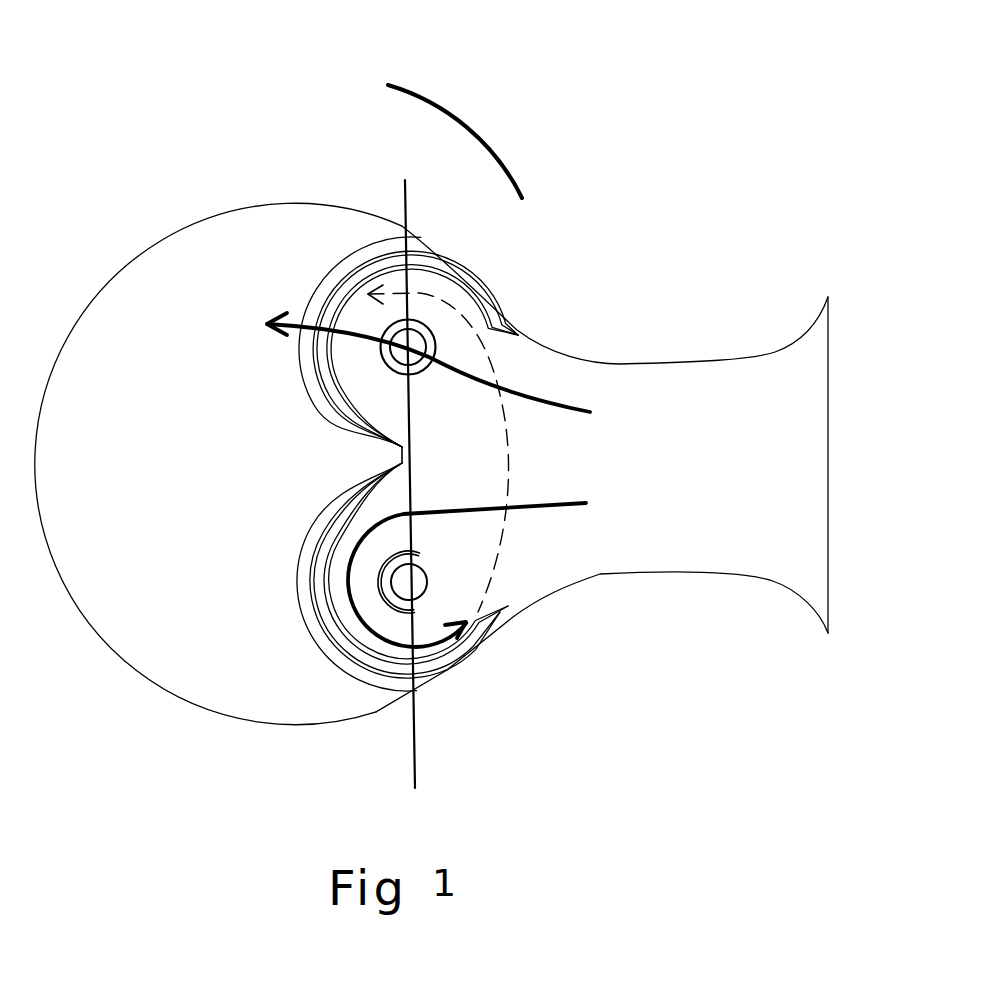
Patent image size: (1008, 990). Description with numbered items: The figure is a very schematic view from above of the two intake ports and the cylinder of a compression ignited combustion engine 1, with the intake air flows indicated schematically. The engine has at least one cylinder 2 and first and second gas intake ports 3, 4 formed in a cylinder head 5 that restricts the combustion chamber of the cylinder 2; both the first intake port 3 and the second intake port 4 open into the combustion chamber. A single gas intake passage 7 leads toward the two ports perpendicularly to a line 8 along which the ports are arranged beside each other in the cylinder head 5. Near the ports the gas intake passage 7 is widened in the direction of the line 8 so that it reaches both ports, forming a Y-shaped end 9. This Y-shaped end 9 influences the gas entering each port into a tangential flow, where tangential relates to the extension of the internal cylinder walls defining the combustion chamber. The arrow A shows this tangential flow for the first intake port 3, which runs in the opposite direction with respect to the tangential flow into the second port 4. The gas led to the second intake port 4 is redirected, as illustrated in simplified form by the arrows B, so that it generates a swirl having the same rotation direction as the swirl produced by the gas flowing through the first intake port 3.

The compression ignited combustion engine 1 is at (470, 128).
The cylinder 2 is at (100, 637).
The first gas intake port 3 is at (453, 342).
The second gas intake port 4 is at (470, 574).
The cylinder head 5 is at (120, 340).
The gas intake passage 7 is at (828, 446).
The line 8 is at (415, 768).
The Y-shaped end 9 is at (432, 464).
The arrow A is at (485, 380).
The arrows B is at (507, 462).